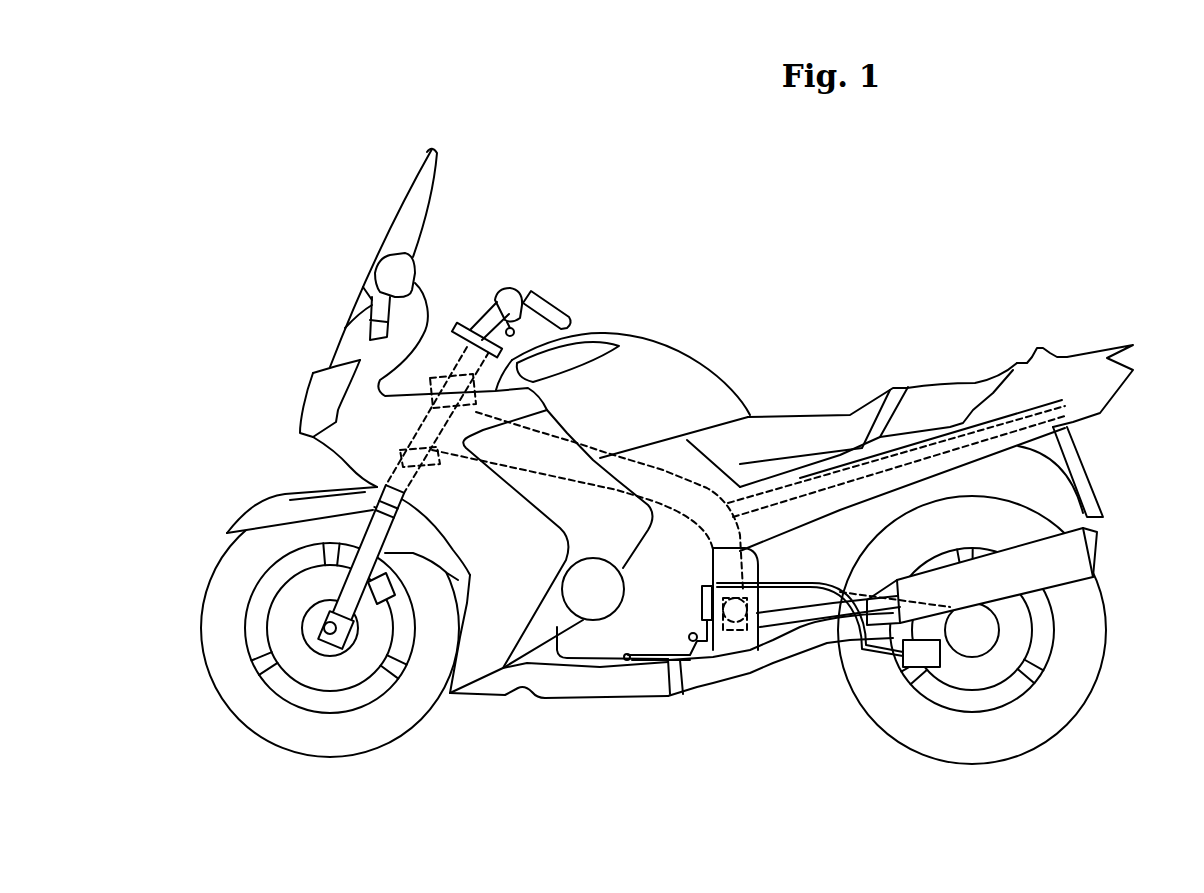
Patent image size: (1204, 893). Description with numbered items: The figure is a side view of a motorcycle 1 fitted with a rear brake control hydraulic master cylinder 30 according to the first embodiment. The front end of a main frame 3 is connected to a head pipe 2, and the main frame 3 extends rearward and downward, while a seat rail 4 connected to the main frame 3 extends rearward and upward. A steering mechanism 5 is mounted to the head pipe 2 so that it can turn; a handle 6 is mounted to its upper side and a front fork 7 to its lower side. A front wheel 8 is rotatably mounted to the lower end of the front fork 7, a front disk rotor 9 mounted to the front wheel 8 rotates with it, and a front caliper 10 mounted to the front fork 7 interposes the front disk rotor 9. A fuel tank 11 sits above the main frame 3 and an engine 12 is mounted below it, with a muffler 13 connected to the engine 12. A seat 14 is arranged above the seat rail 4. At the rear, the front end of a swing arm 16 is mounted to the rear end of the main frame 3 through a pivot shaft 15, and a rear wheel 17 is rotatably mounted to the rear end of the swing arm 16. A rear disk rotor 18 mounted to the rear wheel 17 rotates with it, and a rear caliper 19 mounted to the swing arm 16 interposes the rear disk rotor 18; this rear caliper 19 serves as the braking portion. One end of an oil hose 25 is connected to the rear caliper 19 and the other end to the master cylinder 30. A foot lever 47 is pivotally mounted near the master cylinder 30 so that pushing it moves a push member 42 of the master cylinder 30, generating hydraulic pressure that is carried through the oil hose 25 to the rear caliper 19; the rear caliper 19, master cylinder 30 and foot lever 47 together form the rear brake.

The motorcycle 1 is at (590, 172).
The head pipe 2 is at (420, 413).
The main frame 3 is at (663, 468).
The seat rail 4 is at (995, 428).
The steering mechanism 5 is at (443, 390).
The handle 6 is at (553, 317).
The front fork 7 is at (355, 586).
The front wheel 8 is at (225, 654).
The front disk rotor 9 is at (280, 613).
The front caliper 10 is at (380, 637).
The fuel tank 11 is at (642, 353).
The engine 12 is at (592, 595).
The muffler 13 is at (1093, 545).
The seat 14 is at (803, 425).
The pivot shaft 15 is at (743, 590).
The swing arm 16 is at (862, 642).
The rear wheel 17 is at (1073, 675).
The rear disk rotor 18 is at (1018, 622).
The rear caliper 19 is at (922, 660).
The oil hose 25 is at (815, 585).
The rear brake control hydraulic master cylinder 30 is at (697, 577).
The push member 42 is at (707, 626).
The foot lever 47 is at (643, 662).